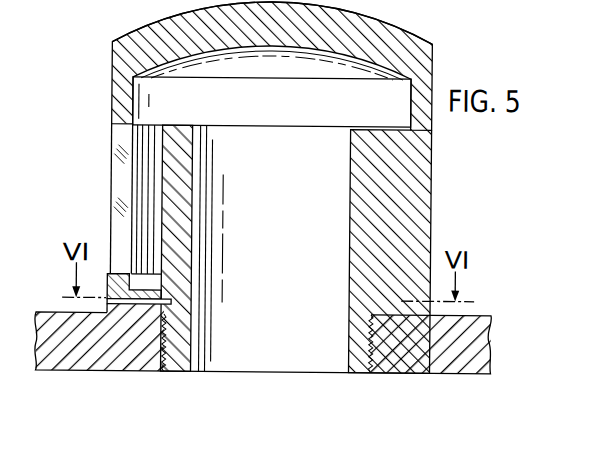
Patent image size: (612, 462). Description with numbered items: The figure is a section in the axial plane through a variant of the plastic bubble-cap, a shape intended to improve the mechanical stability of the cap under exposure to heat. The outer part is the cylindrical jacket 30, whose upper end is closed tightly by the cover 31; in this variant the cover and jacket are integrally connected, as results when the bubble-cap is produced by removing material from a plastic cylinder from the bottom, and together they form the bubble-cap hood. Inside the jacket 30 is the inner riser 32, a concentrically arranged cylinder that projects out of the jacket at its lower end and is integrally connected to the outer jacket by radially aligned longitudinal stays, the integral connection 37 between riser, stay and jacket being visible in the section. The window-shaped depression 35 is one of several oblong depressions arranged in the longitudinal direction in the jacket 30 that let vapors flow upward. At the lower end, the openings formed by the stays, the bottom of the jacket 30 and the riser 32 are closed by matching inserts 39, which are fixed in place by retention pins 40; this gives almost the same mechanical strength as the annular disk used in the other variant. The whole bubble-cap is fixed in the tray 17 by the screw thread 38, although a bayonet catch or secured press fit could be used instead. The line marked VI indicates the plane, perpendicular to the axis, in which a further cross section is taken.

The tray 17 is at (450, 373).
The cylindrical jacket 30 is at (110, 103).
The cover 31 is at (392, 28).
The inner riser 32 is at (177, 126).
The oblong window-shaped depression 35 is at (147, 183).
The integral connection 37 is at (378, 228).
The screw thread 38 is at (371, 357).
The insert 39 is at (147, 300).
The retention pin 40 is at (120, 302).